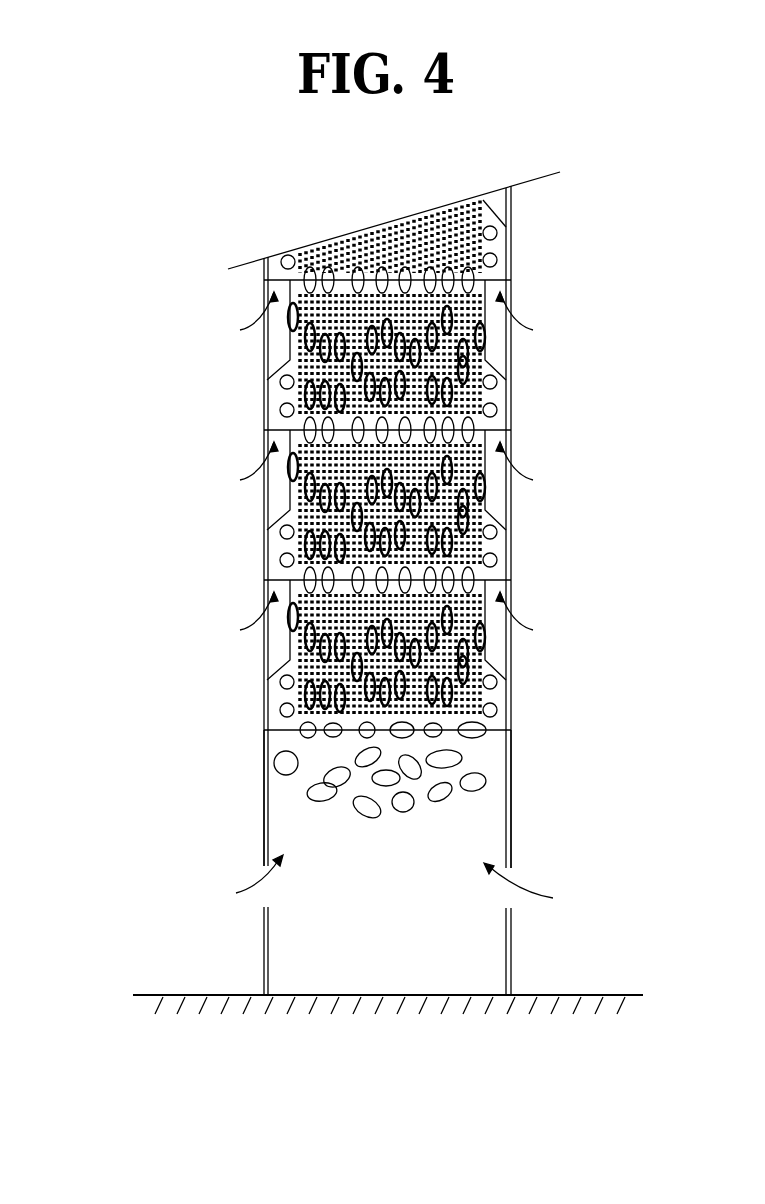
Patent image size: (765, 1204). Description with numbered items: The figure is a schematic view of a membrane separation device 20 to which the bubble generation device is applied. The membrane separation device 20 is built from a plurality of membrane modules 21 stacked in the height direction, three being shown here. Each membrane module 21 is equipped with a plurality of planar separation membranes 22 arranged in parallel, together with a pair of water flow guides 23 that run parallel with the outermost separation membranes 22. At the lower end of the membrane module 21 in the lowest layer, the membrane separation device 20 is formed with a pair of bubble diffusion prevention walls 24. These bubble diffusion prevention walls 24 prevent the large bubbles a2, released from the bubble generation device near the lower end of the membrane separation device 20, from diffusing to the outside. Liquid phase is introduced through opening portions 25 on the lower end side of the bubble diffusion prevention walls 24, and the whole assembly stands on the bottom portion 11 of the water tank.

The membrane separation device 20 is at (197, 365).
The membrane module 21 is at (518, 227).
The separation membrane 22 is at (428, 360).
The water flow guide 23 is at (511, 401).
The bubble diffusion prevention wall 24 is at (262, 793).
The opening portion 25 is at (262, 875).
The bottom portion 11 is at (598, 995).
The large bubbles a2 is at (376, 838).